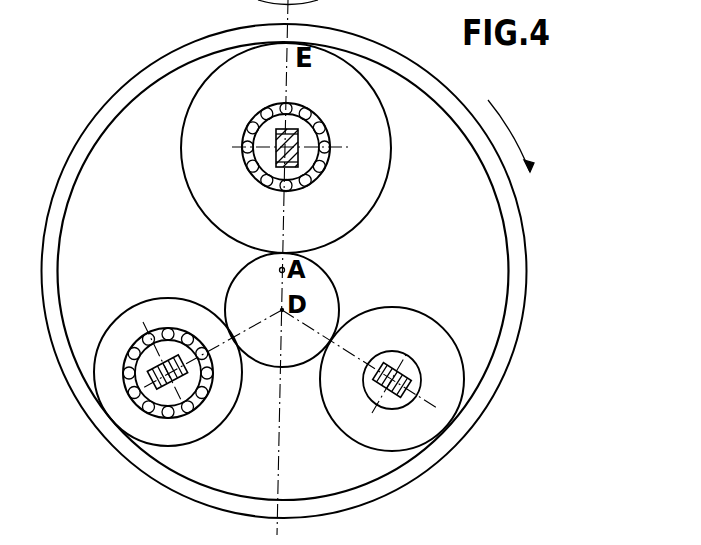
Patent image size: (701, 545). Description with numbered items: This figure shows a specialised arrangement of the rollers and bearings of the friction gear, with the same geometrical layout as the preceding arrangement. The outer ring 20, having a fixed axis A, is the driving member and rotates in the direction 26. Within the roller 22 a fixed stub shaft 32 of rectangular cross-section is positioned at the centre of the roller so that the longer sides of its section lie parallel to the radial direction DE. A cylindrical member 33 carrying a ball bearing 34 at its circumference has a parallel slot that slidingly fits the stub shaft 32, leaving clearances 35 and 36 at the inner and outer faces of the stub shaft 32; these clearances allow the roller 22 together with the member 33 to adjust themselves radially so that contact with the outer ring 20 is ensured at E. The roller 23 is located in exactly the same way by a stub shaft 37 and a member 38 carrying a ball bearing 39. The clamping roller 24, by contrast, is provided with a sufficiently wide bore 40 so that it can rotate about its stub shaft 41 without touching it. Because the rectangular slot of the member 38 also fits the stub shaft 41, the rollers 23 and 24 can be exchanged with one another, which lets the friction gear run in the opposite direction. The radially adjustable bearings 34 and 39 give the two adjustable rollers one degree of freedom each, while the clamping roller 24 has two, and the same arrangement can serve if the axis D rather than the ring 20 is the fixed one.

The outer ring 20 is at (112, 107).
The roller 22 is at (350, 80).
The roller 23 is at (152, 315).
The clamping roller 24 is at (438, 352).
The direction of rotation 26 is at (503, 123).
The stub shaft 32 is at (298, 142).
The cylindrical member 33 is at (268, 125).
The ball bearing 34 is at (243, 132).
The clearance 35 is at (277, 163).
The clearance 36 is at (285, 127).
The stub shaft 37 is at (152, 364).
The member 38 is at (127, 378).
The ball bearing 39 is at (176, 410).
The bore 40 is at (412, 387).
The stub shaft 41 is at (403, 397).